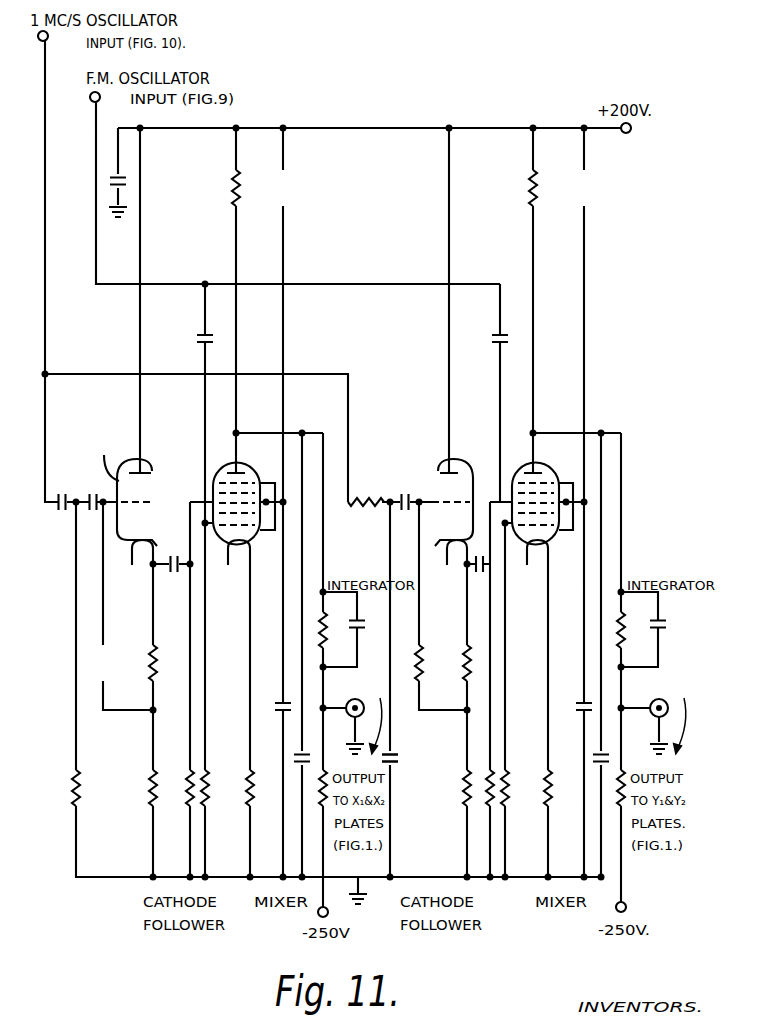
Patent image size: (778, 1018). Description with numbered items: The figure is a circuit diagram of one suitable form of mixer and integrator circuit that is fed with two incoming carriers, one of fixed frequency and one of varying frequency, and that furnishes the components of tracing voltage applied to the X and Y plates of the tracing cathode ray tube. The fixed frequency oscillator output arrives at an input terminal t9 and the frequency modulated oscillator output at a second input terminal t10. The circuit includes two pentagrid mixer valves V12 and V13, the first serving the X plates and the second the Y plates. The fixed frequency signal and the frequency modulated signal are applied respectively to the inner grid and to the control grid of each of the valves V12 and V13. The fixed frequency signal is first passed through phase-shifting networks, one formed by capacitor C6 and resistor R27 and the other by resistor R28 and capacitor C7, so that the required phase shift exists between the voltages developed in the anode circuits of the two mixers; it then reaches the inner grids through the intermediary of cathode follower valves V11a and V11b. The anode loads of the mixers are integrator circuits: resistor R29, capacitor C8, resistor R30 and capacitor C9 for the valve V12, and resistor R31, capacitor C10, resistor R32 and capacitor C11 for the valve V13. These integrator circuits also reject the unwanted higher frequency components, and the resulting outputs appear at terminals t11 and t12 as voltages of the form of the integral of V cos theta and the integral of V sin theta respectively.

The 1 Mc/s oscillator input terminal t9 is at (55, 46).
The F.M. oscillator input terminal t10 is at (111, 105).
The output terminal t11 is at (364, 714).
The output terminal t12 is at (668, 714).
The phase-shifting network capacitor C6 is at (62, 493).
The phase-shifting network capacitor C7 is at (402, 761).
The integrator capacitor C8 is at (275, 708).
The integrator capacitor C9 is at (367, 628).
The integrator capacitor C10 is at (591, 687).
The integrator capacitor C11 is at (673, 626).
The phase-shifting network resistor R27 is at (59, 788).
The phase-shifting network resistor R28 is at (366, 491).
The integrator resistor R29 is at (251, 188).
The integrator resistor R30 is at (337, 630).
The integrator resistor R31 is at (550, 188).
The integrator resistor R32 is at (636, 630).
The cathode follower valve V11a is at (124, 506).
The cathode follower valve V11b is at (461, 506).
The pentagrid mixer valve V12 is at (244, 505).
The pentagrid mixer valve V13 is at (546, 505).